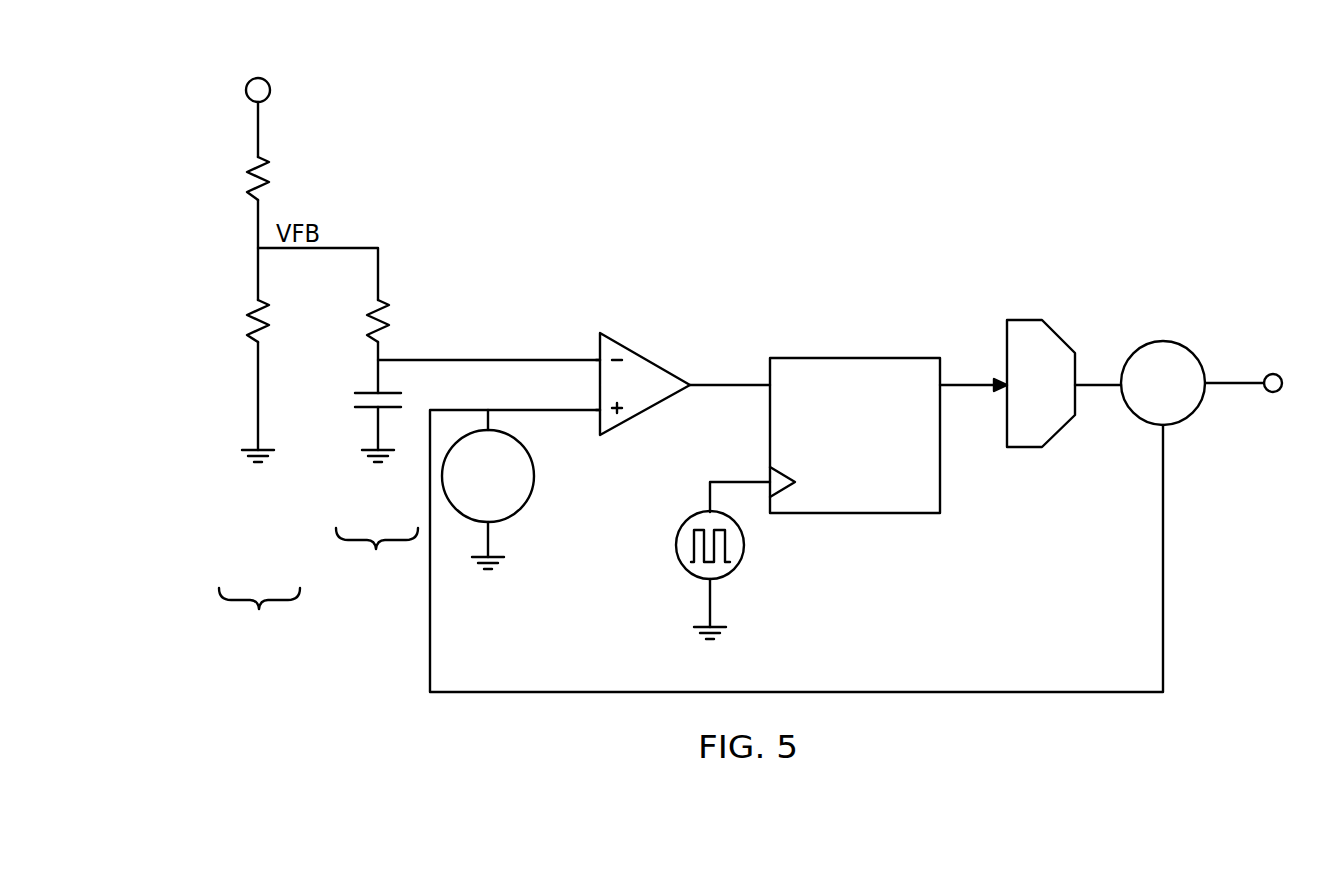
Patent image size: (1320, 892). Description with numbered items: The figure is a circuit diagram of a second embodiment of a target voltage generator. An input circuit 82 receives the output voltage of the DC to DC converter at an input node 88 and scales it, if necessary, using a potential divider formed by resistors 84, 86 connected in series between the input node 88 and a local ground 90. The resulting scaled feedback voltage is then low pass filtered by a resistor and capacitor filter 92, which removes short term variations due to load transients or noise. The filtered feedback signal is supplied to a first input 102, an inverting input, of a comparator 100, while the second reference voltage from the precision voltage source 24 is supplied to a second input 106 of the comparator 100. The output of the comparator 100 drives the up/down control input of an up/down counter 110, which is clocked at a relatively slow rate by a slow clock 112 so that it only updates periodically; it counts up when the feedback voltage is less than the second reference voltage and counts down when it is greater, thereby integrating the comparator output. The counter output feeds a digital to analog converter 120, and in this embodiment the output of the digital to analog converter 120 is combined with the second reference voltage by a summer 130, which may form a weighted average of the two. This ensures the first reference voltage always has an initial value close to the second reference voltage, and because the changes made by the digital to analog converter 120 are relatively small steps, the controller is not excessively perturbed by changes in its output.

The input node 88 is at (258, 78).
The resistor 84 is at (250, 175).
The resistor 86 is at (250, 317).
The local ground 90 is at (264, 464).
The input circuit 82 is at (259, 618).
The resistor and capacitor filter 92 is at (377, 444).
The precision voltage source 24 is at (490, 535).
The comparator 100 is at (645, 358).
The first input 102 is at (598, 354).
The non-inverting input of comparator 106 is at (598, 418).
The up/down counter 110 is at (852, 357).
The slow clock 112 is at (690, 568).
The digital to analog converter 120 is at (1042, 319).
The summer 130 is at (1164, 342).